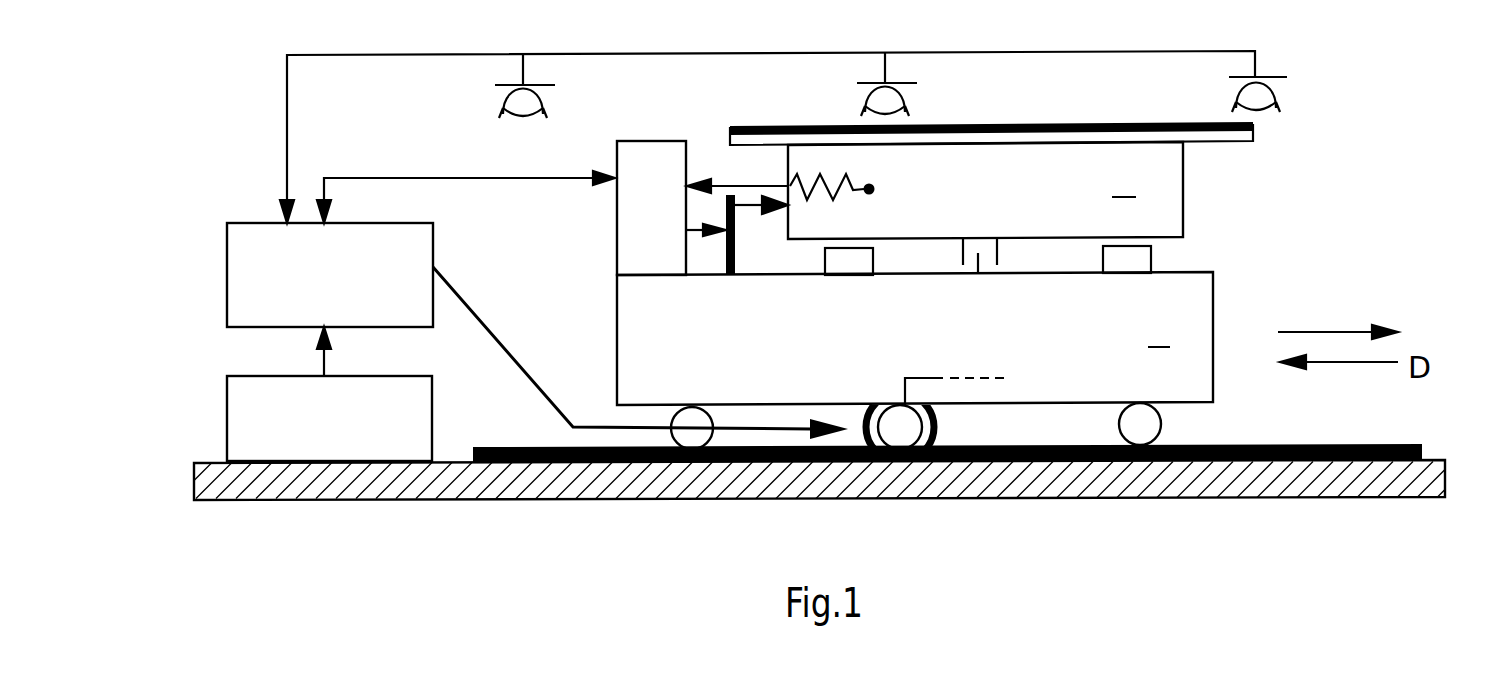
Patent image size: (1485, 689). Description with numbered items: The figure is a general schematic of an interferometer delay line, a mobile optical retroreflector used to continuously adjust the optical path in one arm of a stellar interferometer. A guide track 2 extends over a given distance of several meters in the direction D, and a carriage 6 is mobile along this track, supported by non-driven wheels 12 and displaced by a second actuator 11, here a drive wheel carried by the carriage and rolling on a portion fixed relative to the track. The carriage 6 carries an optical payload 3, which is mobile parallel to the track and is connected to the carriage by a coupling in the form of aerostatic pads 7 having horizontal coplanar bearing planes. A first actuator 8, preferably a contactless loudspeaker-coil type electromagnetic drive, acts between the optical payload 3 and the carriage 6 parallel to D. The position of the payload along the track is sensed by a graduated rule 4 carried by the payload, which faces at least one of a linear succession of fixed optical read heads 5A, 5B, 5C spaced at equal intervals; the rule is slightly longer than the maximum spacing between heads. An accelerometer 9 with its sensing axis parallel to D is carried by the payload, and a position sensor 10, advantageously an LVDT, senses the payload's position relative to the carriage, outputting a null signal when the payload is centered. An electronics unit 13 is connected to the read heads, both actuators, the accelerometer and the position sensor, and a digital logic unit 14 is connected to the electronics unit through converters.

The guide track 2 is at (1390, 442).
The optical payload 3 is at (985, 190).
The graduated rule 4 is at (1050, 120).
The optical read head 5A is at (1278, 98).
The optical read head 5B is at (910, 102).
The optical read head 5C is at (547, 110).
The carriage 6 is at (915, 273).
The aerostatic pads 7 is at (852, 270).
The first actuator 8 is at (780, 207).
The accelerometer 9 is at (813, 170).
The position sensor 10 is at (997, 253).
The second actuator 11 is at (887, 420).
The non-driven wheels 12 is at (688, 415).
The electronics unit 13 is at (227, 277).
The digital logic unit 14 is at (227, 423).